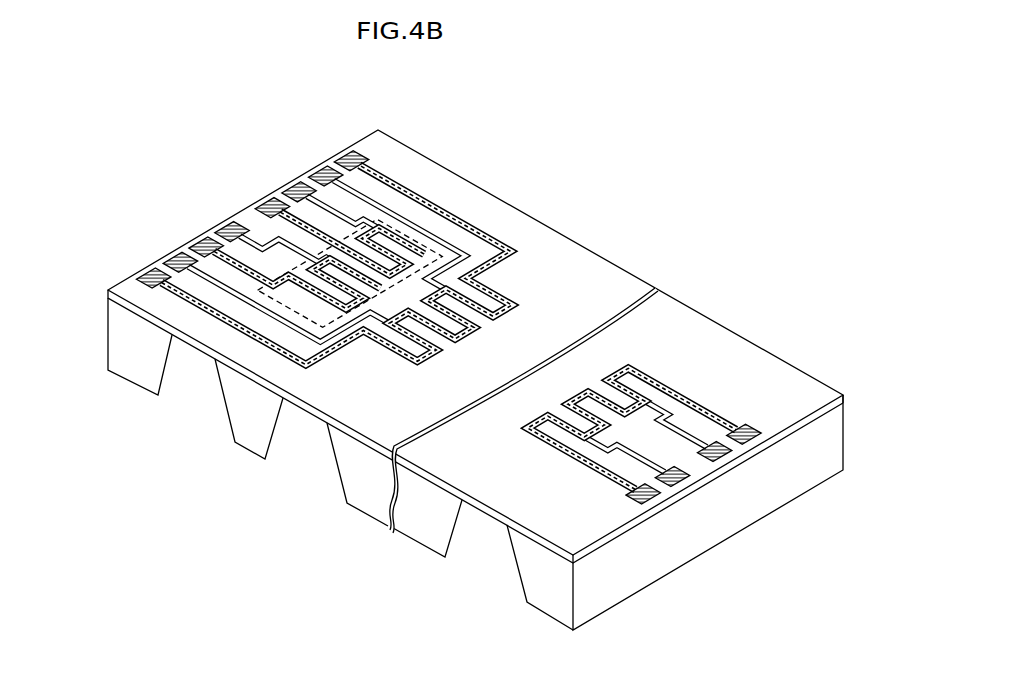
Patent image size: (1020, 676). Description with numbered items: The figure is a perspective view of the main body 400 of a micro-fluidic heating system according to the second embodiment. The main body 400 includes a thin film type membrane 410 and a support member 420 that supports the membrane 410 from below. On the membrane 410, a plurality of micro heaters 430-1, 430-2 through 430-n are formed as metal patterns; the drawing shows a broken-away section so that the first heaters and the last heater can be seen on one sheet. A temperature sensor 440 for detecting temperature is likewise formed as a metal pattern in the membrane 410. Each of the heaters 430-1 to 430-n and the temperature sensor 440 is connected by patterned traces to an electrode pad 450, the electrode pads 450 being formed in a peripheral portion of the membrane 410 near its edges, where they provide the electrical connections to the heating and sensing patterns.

The main body 400 is at (469, 380).
The thin film type membrane 410 is at (108, 296).
The support member 420 is at (116, 344).
The micro heater 430-1 is at (290, 308).
The micro heater 430-2 is at (395, 363).
The micro heater 430-n is at (545, 446).
The temperature sensor 440 is at (668, 382).
The electrode pad 450 is at (352, 152).